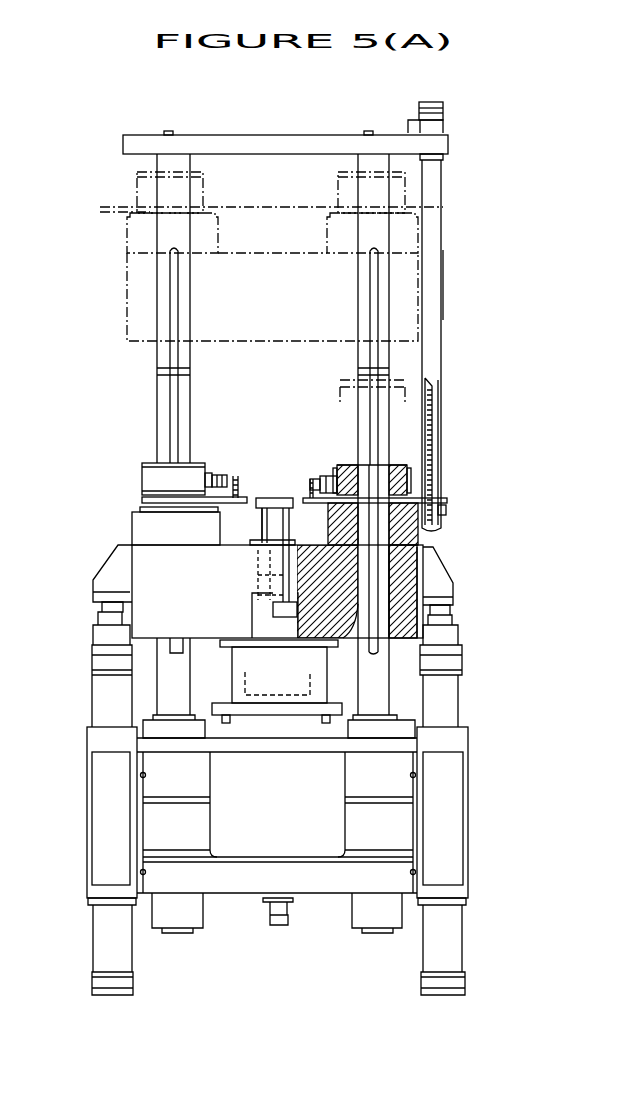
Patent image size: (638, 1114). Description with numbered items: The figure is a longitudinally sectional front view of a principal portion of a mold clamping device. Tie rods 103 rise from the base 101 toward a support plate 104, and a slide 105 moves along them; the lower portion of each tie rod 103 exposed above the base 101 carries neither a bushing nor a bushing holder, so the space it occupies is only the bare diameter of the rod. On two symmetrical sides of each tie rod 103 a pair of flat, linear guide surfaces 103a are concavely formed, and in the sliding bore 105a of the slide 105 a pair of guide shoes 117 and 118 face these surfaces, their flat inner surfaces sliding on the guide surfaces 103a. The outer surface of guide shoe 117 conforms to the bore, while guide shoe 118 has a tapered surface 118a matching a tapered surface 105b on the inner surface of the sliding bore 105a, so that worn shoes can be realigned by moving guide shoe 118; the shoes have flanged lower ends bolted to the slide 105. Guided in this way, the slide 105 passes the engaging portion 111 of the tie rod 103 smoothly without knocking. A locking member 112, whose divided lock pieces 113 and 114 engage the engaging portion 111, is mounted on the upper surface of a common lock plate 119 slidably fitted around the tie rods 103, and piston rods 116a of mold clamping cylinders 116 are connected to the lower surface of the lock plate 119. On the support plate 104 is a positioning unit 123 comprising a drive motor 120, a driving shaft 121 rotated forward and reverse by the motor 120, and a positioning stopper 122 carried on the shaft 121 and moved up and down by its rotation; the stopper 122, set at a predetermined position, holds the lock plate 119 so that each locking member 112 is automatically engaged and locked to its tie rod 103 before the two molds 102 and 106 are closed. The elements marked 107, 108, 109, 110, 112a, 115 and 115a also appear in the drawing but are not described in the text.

The base 101 is at (310, 753).
The mold 102 is at (268, 712).
The tie rod 103 is at (157, 307).
The guide surface 103a is at (171, 417).
The support plate 104 is at (304, 135).
The slide 105 is at (126, 290).
The sliding bore 105a is at (358, 608).
The tapered surface 105b is at (376, 635).
The mold 106 is at (243, 655).
The base frame 107 is at (444, 708).
The lower stop block 108 is at (252, 607).
The post head 109 is at (262, 497).
The post 110 is at (262, 520).
The engaging portion 111 is at (191, 424).
The locking member 112 is at (140, 204).
The bearing plate 112a is at (152, 479).
The lock piece 113 is at (347, 466).
The lock piece 114 is at (420, 478).
The stud 115 is at (216, 470).
The nut 115a is at (336, 479).
The mold clamping cylinder 116 is at (131, 237).
The piston rod 116a is at (434, 500).
The guide shoe 117 is at (337, 582).
The guide shoe 118 is at (420, 596).
The tapered surface 118a is at (418, 574).
The lock plate 119 is at (408, 490).
The drive motor 120 is at (444, 118).
The driving shaft 121 is at (440, 406).
The positioning stopper 122 is at (453, 514).
The positioning unit 123 is at (451, 307).